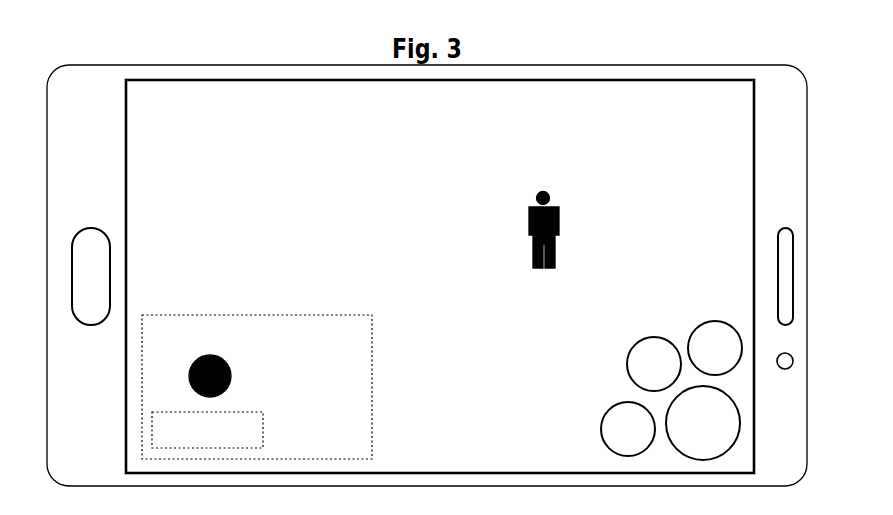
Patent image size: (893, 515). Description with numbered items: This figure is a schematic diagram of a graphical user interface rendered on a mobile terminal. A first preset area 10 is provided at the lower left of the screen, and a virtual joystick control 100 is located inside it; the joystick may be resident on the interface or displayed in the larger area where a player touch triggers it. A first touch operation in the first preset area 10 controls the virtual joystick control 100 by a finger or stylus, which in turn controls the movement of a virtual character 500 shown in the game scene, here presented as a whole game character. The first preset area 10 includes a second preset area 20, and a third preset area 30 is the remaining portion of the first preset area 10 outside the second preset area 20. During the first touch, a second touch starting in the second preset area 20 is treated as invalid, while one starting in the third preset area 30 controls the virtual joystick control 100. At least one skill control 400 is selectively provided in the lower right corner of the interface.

The first preset area 10 is at (312, 310).
The second preset area 20 is at (268, 440).
The third preset area 30 is at (373, 377).
The virtual joystick control 100 is at (232, 388).
The skill control 400 is at (627, 380).
The virtual character 500 is at (533, 208).